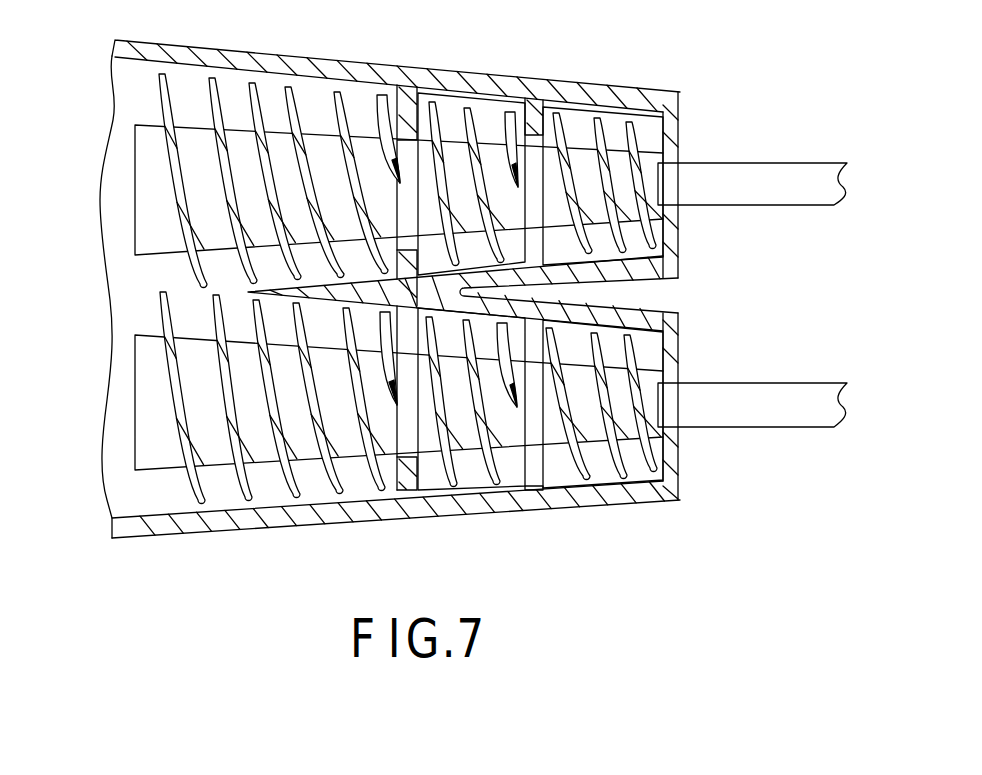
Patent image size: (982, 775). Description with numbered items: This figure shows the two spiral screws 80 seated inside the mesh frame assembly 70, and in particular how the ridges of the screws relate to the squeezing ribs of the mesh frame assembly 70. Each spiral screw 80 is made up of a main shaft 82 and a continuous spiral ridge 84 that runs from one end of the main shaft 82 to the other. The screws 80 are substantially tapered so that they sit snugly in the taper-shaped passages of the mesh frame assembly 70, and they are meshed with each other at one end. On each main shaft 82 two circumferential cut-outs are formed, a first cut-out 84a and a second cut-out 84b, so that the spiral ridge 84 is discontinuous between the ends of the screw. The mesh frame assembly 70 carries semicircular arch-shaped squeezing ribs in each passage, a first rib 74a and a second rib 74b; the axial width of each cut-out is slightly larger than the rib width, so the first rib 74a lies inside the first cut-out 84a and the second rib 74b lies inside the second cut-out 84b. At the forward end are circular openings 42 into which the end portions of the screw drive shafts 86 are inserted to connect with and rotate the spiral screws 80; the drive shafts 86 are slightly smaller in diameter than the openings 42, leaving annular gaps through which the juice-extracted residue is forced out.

The mesh frame assembly 70 is at (352, 60).
The circular openings 42 is at (678, 158).
The screw drive shafts 86 is at (775, 175).
The first rib 74a is at (528, 478).
The second rib 74b is at (403, 486).
The spiral screws 80 is at (153, 200).
The main shaft 82 is at (147, 138).
The spiral ridge 84 is at (175, 108).
The first cut-out 84a is at (520, 175).
The second cut-out 84b is at (396, 178).